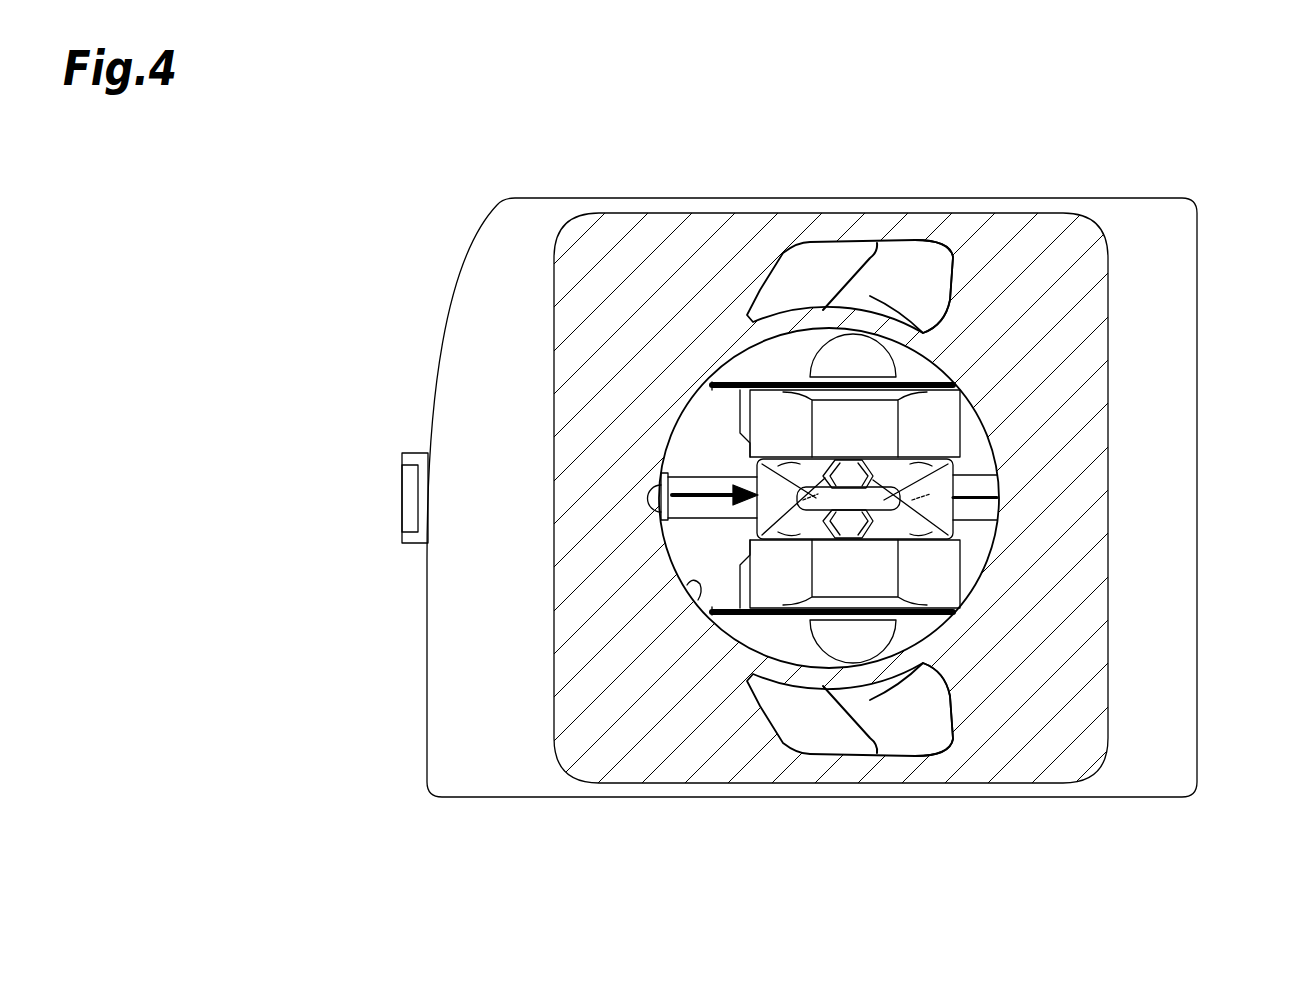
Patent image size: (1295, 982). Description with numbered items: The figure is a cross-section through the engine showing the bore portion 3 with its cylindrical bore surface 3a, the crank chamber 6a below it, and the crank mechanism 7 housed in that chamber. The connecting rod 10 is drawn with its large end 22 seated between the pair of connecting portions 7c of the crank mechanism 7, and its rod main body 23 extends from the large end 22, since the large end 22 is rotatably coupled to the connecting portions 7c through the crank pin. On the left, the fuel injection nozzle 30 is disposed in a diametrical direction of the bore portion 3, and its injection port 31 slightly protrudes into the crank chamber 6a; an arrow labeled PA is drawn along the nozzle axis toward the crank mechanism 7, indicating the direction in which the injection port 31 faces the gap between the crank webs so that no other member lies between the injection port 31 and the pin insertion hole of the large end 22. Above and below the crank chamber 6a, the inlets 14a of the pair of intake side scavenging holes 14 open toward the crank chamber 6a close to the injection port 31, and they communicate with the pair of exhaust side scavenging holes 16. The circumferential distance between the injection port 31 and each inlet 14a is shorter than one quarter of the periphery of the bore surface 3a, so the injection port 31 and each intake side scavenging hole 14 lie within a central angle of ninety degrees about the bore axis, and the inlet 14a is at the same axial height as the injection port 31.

The crank mechanism 7 is at (733, 398).
The connecting portions 7c is at (938, 423).
The crank chamber 6a is at (720, 450).
The inlets 14a is at (790, 843).
The intake side scavenging holes 14 is at (850, 505).
The exhaust side scavenging holes 16 is at (917, 265).
The connecting rod 10 is at (957, 465).
The large end 22 is at (937, 497).
The rod main body 23 is at (753, 530).
The bore portion 3 is at (684, 674).
The bore surface 3a is at (668, 507).
The injection port 31 is at (687, 585).
The fuel injection nozzle 30 is at (398, 497).
The pressing direction PA is at (703, 492).